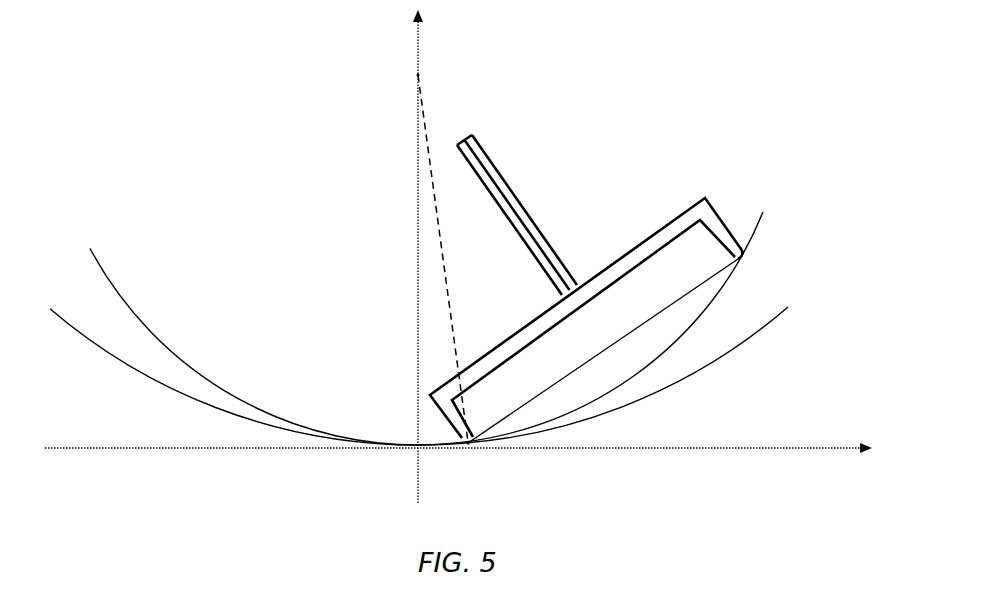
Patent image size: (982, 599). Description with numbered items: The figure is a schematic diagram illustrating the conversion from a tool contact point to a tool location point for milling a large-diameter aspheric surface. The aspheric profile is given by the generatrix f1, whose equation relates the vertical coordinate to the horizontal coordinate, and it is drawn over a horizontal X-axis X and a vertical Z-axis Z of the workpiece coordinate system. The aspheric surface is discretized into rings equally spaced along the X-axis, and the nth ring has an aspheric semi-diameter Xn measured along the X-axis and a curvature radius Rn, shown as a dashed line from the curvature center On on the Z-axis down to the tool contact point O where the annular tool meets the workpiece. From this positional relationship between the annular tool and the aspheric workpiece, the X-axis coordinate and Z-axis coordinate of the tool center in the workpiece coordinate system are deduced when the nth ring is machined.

The Z-axis Z is at (395, 252).
The X-axis X is at (458, 475).
The curvature center of the nth ring On is at (392, 89).
The curvature radius of the nth ring Rn is at (450, 258).
The tool contact point O is at (463, 436).
The aspheric semi-diameter of the nth ring Xn is at (478, 467).
The generatrix of the aspheric surface f1 is at (439, 365).